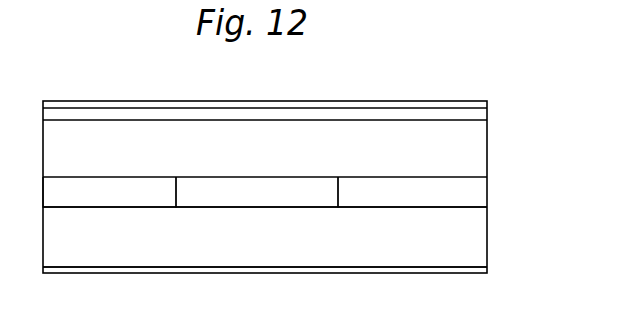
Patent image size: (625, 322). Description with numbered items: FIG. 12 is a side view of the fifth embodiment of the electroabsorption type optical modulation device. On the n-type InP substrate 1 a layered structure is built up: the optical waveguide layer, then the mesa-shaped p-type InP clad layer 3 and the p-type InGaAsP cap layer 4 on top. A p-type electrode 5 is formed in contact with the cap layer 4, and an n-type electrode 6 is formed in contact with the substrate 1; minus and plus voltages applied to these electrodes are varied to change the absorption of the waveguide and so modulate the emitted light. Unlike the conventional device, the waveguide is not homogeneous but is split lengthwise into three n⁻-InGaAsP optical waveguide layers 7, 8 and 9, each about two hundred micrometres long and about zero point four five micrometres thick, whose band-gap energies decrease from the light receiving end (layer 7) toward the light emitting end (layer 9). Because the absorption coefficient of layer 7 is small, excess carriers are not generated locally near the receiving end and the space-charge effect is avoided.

The n-type InP substrate 1 is at (487, 233).
The p-type InP clad layer 3 is at (487, 155).
The p-type InGaAsP cap layer 4 is at (488, 117).
The p-type electrode 5 is at (488, 104).
The n-type electrode 6 is at (488, 270).
The optical waveguide layer 7 is at (108, 184).
The optical waveguide layer 8 is at (253, 185).
The optical waveguide layer 9 is at (403, 185).